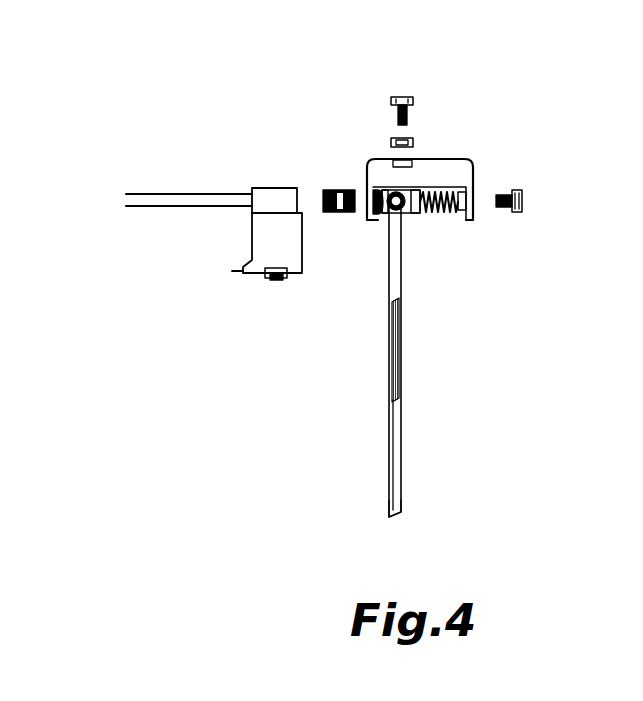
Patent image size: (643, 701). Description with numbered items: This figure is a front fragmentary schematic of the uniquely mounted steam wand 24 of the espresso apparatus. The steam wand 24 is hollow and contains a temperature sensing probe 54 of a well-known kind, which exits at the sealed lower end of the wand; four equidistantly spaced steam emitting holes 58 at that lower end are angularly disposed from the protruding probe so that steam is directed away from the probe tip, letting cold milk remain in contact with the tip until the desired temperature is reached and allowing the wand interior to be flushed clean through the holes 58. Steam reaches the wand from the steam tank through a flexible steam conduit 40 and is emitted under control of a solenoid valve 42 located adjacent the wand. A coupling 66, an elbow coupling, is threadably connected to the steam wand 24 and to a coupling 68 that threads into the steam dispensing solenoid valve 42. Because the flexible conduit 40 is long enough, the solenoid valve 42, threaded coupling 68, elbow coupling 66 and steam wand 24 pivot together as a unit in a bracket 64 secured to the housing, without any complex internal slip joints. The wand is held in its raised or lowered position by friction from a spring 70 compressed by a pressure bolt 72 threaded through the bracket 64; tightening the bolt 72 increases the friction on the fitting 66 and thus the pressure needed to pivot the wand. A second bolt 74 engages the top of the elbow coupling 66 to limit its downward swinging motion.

The steam wand 24 is at (407, 278).
The flexible steam conduit 40 is at (180, 200).
The solenoid valve 42 is at (278, 198).
The temperature sensing probe 54 is at (398, 352).
The steam emitting holes 58 is at (395, 505).
The bracket 64 is at (473, 175).
The coupling 66 is at (417, 188).
The coupling 68 is at (342, 197).
The spring 70 is at (438, 212).
The pressure bolt 72 is at (523, 202).
The second bolt 74 is at (410, 92).